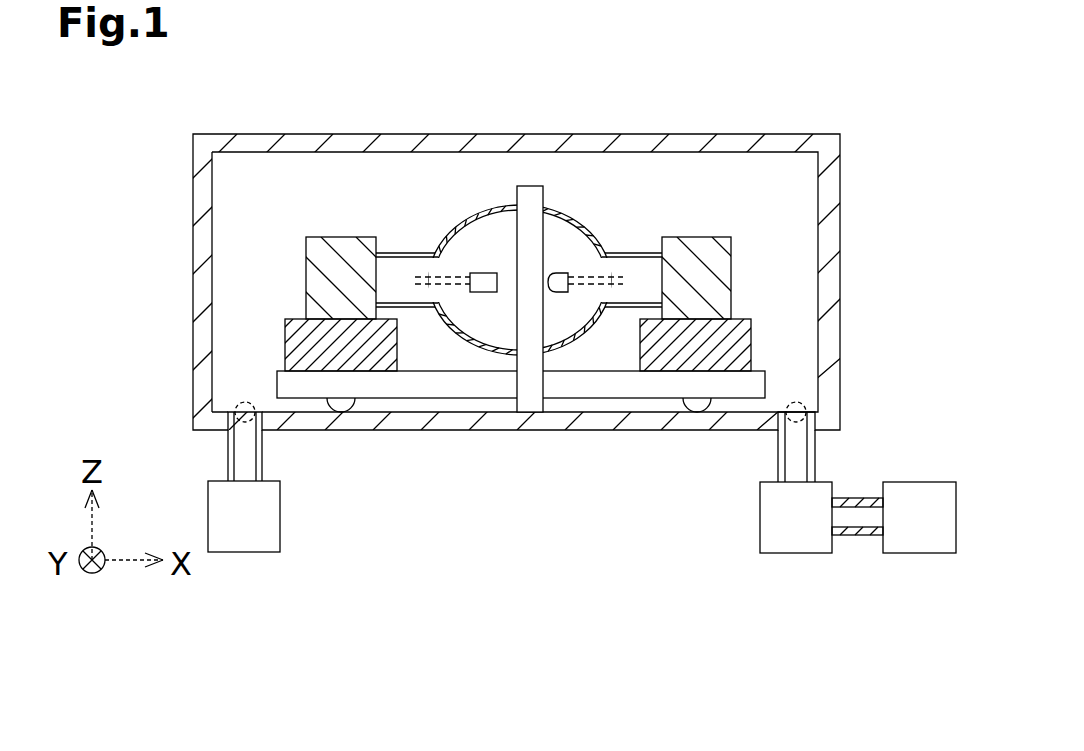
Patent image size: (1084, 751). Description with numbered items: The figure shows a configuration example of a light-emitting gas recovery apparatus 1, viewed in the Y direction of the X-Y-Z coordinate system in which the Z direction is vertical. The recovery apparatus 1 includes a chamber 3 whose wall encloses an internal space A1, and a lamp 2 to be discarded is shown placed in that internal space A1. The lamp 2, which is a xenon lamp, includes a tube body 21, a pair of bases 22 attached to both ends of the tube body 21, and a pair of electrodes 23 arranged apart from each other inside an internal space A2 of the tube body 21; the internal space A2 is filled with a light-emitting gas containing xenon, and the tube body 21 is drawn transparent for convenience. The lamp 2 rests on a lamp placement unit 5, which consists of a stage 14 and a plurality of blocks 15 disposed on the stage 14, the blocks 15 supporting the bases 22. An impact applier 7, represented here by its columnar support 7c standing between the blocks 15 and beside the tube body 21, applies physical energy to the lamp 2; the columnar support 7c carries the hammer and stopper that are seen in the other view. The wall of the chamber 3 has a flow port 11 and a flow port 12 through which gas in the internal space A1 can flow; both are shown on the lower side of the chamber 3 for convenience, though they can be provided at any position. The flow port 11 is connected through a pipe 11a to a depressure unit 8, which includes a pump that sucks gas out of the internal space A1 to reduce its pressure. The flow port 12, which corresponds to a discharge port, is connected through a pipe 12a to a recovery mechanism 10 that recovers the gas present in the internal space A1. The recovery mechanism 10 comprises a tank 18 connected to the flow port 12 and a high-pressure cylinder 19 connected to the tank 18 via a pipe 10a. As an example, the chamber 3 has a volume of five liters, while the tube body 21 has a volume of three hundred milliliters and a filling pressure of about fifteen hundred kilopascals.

The recovery apparatus 1 is at (145, 137).
The lamp 2 is at (518, 295).
The chamber 3 is at (193, 226).
The lamp placement unit 5 is at (508, 448).
The impact applier 7 is at (530, 212).
The columnar support 7c is at (523, 186).
The depressure unit 8 is at (280, 530).
The recovery mechanism 10 is at (859, 531).
The pipe 10a is at (860, 498).
The flow port 11 is at (237, 402).
The pipe 11a is at (263, 458).
The flow port 12 is at (800, 403).
The pipe 12a is at (778, 460).
The stage 14 is at (610, 522).
The blocks 15 is at (397, 350).
The tank 18 is at (795, 553).
The high-pressure cylinder 19 is at (917, 553).
The tube body 21 is at (447, 215).
The bases 22 is at (335, 237).
The electrodes 23 is at (482, 273).
The internal space A1 is at (290, 212).
The internal space A2 is at (510, 338).